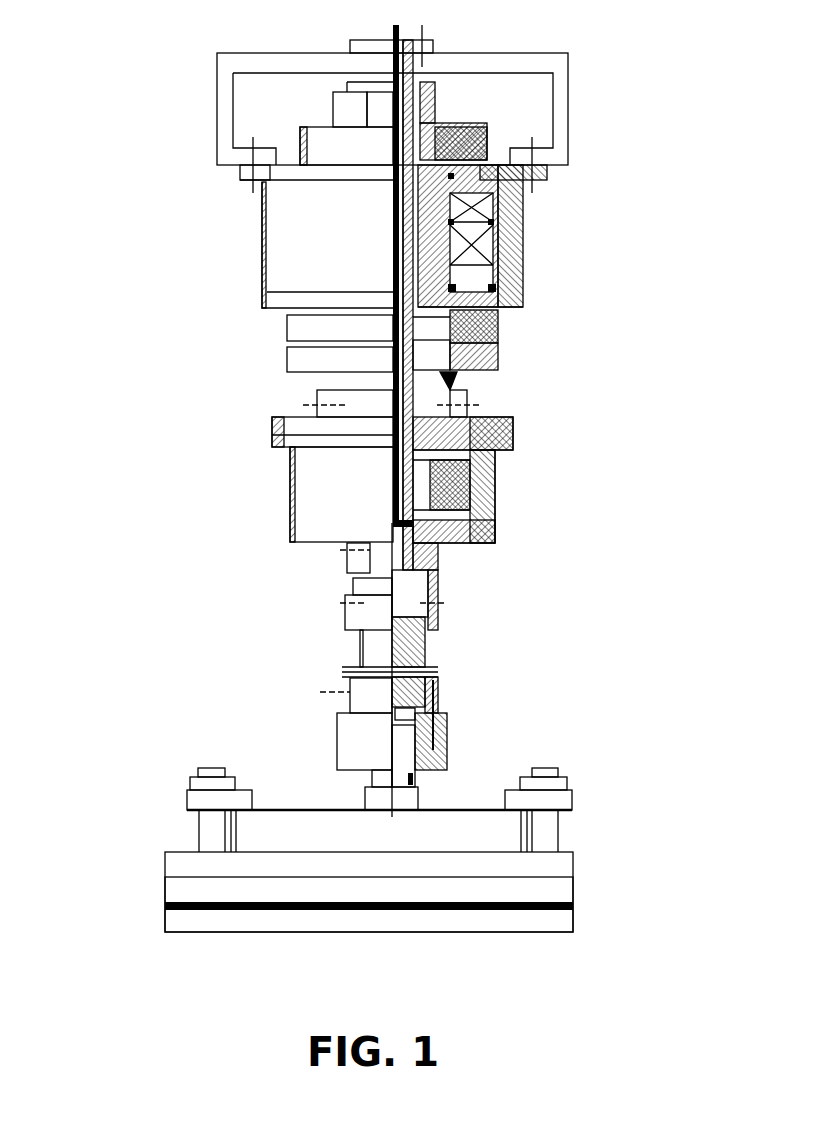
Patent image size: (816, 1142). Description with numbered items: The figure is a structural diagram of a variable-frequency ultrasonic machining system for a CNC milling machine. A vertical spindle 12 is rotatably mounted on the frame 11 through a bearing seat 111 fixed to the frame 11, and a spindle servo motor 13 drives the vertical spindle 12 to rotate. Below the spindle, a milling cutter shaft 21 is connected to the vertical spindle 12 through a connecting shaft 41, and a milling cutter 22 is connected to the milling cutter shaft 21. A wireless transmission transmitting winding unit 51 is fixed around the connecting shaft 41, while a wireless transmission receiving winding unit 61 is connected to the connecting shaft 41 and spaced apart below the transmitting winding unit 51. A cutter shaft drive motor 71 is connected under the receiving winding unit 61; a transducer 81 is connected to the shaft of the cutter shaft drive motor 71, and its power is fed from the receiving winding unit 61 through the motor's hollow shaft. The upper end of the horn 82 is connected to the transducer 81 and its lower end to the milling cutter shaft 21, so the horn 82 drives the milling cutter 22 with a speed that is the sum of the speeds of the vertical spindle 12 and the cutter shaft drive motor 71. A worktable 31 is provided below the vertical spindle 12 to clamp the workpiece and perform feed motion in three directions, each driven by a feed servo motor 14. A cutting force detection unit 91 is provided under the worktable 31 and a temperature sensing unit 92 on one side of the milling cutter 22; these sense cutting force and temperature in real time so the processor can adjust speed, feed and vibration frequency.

The frame 11 is at (230, 125).
The bearing seat 111 is at (528, 257).
The vertical spindle 12 is at (500, 200).
The spindle servo motor 13 is at (275, 252).
The feed servo motor 14 is at (558, 893).
The milling cutter shaft 21 is at (373, 748).
The milling cutter 22 is at (370, 800).
The worktable 31 is at (165, 870).
The connecting shaft 41 is at (330, 390).
The wireless transmission transmitting winding unit 51 is at (283, 327).
The wireless transmission receiving winding unit 61 is at (287, 363).
The cutter shaft drive motor 71 is at (290, 495).
The transducer 81 is at (350, 590).
The horn 82 is at (358, 648).
The cutting force detection unit 91 is at (217, 905).
The temperature sensing unit 92 is at (423, 778).